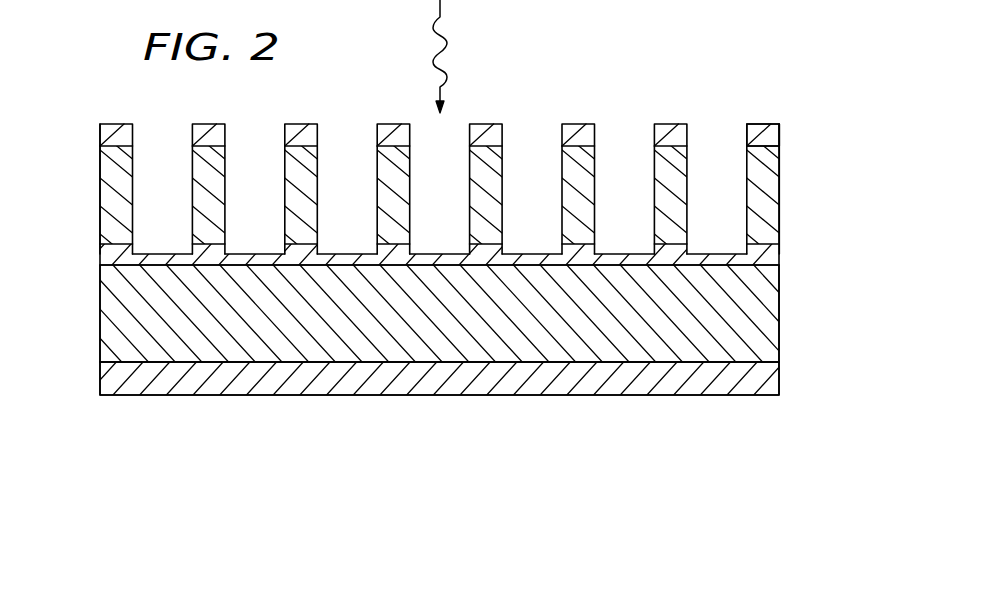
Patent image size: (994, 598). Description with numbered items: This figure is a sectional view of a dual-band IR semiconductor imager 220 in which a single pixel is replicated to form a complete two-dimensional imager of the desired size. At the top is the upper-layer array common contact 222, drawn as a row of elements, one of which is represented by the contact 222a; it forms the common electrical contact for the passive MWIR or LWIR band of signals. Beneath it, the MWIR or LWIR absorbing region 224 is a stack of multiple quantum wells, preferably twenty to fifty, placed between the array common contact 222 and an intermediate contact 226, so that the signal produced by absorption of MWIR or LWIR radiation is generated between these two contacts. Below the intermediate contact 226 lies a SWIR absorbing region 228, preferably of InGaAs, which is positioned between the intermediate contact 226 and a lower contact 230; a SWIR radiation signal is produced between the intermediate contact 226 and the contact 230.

The dual-band IR semiconductor imager 220 is at (644, 62).
The array common contact 222 is at (105, 138).
The contact 222a is at (765, 125).
The MWIR or LWIR absorbing region 224 is at (775, 192).
The intermediate contact 226 is at (777, 255).
The SWIR absorbing region 228 is at (775, 350).
The contact 230 is at (425, 396).